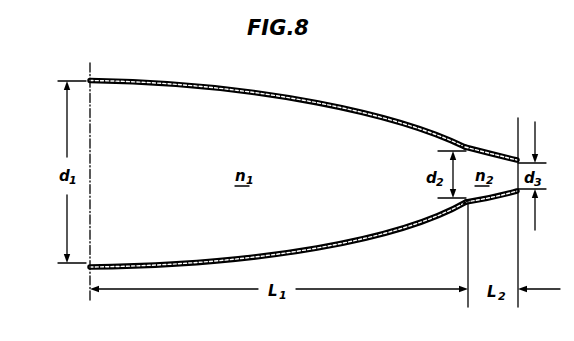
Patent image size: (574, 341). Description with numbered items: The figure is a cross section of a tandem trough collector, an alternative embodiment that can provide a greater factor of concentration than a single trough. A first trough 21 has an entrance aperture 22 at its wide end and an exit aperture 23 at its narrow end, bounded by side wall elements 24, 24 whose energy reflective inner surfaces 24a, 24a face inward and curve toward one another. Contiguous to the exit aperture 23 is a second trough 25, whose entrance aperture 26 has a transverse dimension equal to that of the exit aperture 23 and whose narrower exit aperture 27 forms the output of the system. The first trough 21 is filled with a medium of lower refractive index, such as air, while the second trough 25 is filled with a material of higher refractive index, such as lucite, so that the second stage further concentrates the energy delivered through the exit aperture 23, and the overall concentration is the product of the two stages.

The first trough 21 is at (181, 276).
The entrance aperture 22 is at (90, 198).
The exit aperture 23 is at (460, 206).
The side wall element 24 is at (379, 239).
The energy reflective inner surface 24a is at (237, 257).
The second trough 25 is at (498, 212).
The entrance aperture 26 is at (477, 151).
The exit aperture 27 is at (519, 168).